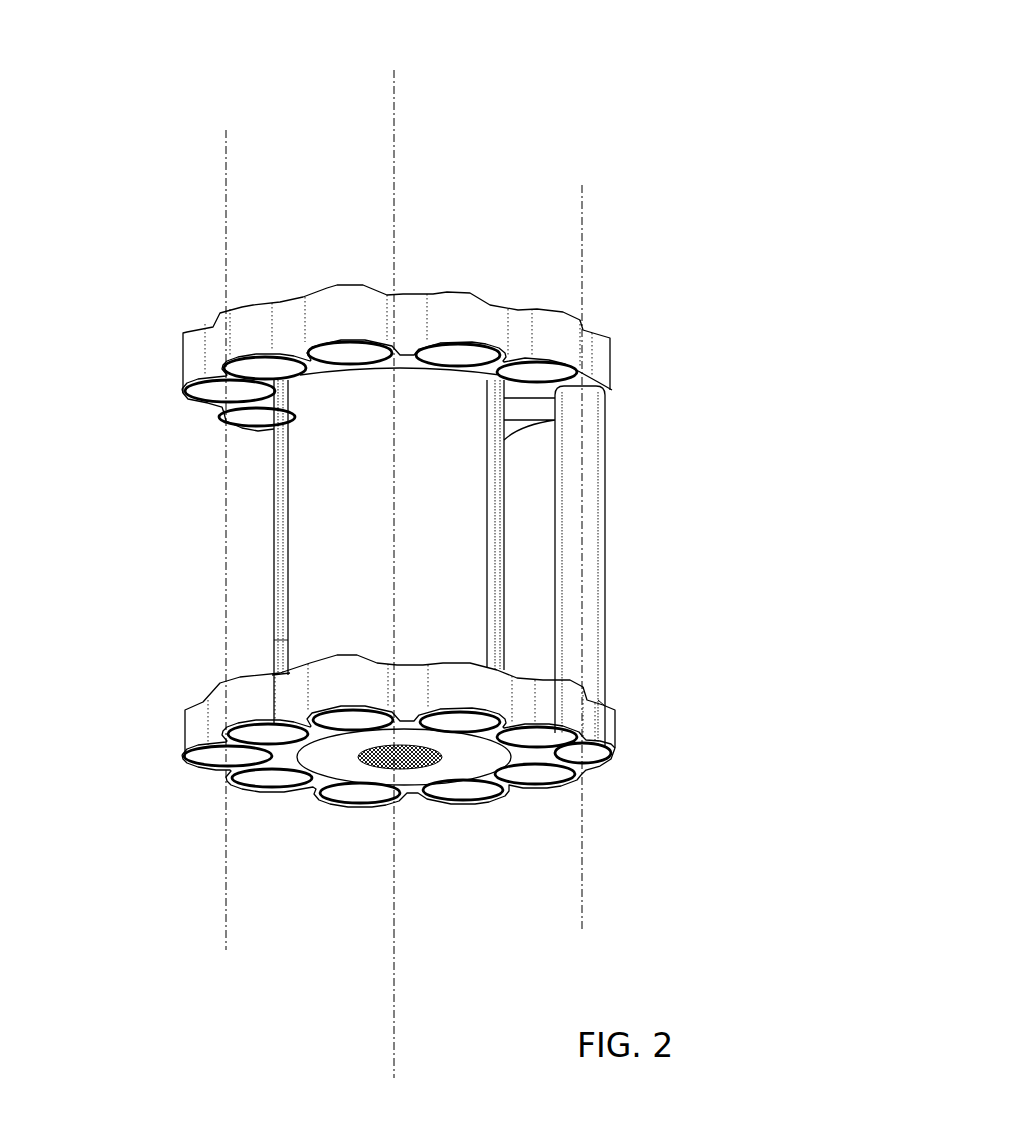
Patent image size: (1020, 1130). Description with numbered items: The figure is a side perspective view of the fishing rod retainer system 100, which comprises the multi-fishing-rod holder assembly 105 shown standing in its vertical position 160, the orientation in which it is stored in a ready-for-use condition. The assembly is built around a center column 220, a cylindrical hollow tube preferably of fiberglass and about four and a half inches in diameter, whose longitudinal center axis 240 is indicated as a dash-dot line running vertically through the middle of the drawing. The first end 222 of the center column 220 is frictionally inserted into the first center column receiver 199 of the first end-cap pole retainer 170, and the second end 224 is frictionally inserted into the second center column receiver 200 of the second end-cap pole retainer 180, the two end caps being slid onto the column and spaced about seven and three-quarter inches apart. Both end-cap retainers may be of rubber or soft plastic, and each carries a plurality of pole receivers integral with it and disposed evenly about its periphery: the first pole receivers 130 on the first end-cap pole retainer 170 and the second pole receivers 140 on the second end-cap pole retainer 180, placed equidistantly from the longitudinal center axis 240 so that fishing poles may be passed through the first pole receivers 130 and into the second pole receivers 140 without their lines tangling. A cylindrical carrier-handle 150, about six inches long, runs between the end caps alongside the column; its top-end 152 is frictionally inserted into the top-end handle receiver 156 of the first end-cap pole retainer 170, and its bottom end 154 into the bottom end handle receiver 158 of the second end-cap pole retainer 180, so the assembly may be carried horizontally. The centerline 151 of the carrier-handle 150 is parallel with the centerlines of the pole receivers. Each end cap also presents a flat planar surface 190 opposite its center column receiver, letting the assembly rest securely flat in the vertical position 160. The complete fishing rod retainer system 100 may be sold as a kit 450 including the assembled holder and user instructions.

The fishing rod retainer system 100 is at (626, 92).
The multi-fishing-rod holder assembly 105 is at (643, 131).
The first pole receivers 130 is at (455, 282).
The second pole receivers 140 is at (478, 660).
The carrier-handle 150 is at (612, 533).
The centerline 151 is at (402, 888).
The top-end 152 is at (328, 282).
The bottom end 154 is at (430, 806).
The top-end handle receiver 156 is at (612, 396).
The bottom end handle receiver 158 is at (606, 698).
The vertical position 160 is at (280, 68).
The first end-cap pole retainer 170 is at (190, 368).
The second end-cap pole retainer 180 is at (194, 723).
The flat planar surface 190 is at (333, 760).
The first center column receiver 199 is at (323, 380).
The second center column receiver 200 is at (268, 664).
The center column 220 is at (270, 553).
The first end 222 is at (270, 470).
The second end 224 is at (270, 648).
The longitudinal center axis 240 is at (402, 983).
The kit 450 is at (668, 178).